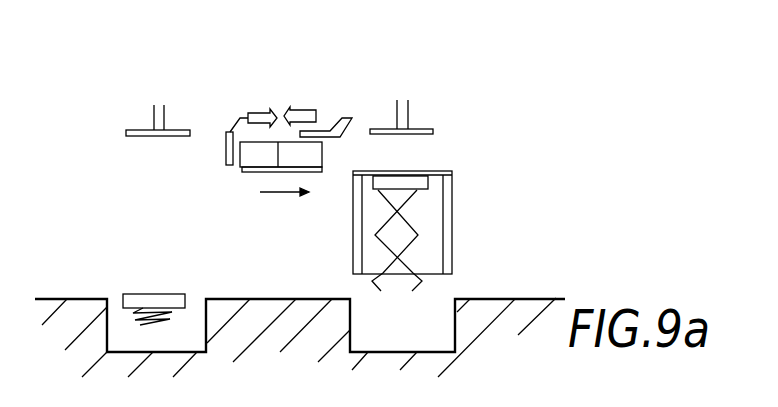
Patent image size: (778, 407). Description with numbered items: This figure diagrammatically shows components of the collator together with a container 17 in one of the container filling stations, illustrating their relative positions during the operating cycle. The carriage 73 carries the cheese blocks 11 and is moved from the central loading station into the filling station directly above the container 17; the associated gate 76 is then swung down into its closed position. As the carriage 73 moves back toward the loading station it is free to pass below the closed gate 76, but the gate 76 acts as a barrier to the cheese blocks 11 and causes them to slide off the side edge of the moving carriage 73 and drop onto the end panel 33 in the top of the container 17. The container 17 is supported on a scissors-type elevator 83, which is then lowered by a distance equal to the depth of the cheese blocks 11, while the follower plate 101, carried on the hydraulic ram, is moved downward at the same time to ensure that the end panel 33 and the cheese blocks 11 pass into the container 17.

The follower plate 101 is at (137, 129).
The gate 76 is at (225, 150).
The cheese block 11 is at (242, 170).
The carriage 73 is at (258, 172).
The container 17 is at (452, 228).
The end panel 33 is at (421, 170).
The scissors-type elevator 83 is at (378, 246).